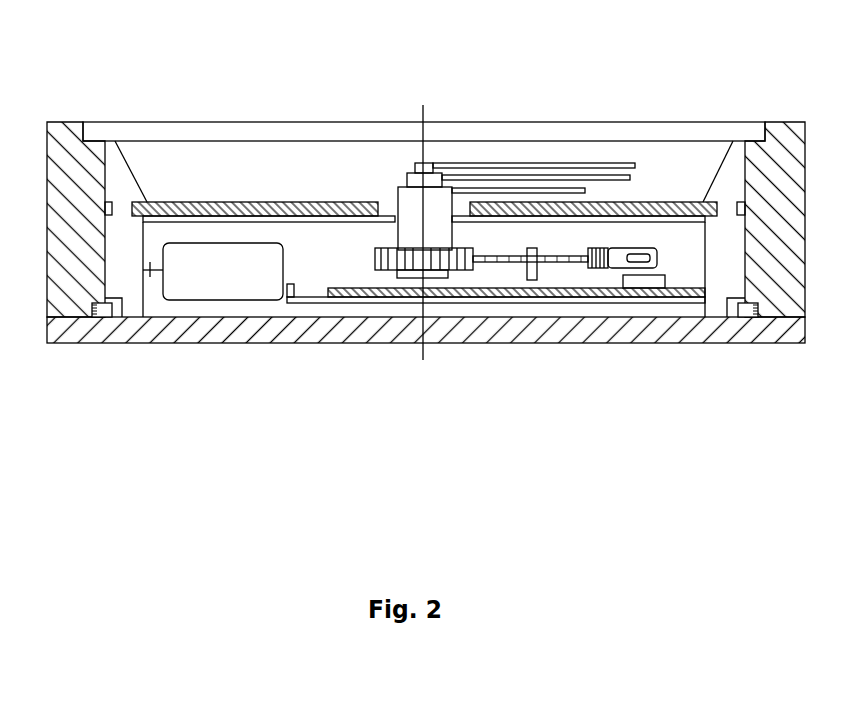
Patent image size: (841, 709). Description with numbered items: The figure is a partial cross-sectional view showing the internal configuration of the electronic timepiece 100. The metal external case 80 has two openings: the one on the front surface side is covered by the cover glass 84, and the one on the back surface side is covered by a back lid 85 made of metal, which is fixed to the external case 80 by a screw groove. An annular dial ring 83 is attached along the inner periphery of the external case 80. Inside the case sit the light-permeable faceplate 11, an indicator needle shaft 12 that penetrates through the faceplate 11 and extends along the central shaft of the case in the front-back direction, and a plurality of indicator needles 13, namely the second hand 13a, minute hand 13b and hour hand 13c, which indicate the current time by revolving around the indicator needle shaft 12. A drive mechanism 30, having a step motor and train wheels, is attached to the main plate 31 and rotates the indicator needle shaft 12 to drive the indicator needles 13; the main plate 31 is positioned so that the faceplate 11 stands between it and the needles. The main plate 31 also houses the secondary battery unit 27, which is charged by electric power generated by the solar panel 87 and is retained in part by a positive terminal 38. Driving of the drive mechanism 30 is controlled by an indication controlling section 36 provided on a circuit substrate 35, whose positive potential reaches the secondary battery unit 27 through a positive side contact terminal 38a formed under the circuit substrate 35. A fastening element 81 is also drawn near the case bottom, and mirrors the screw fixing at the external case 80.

The electronic timepiece 100 is at (762, 46).
The faceplate 11 is at (258, 205).
The solar panel 87 is at (293, 210).
The cover glass 84 is at (322, 133).
The indicator needle shaft 12 is at (420, 163).
The indicator needles 13 is at (534, 120).
The second hand 13a is at (600, 164).
The minute hand 13b is at (547, 176).
The hour hand 13c is at (495, 189).
The dial ring 83 is at (737, 160).
The screw 81 is at (132, 305).
The main plate 31 is at (163, 317).
The secondary battery unit 27 is at (220, 290).
The positive side contact terminal 38a is at (293, 297).
The positive terminal 38 is at (318, 303).
The drive mechanism 30 is at (490, 272).
The circuit substrate 35 is at (583, 295).
The indication controlling section 36 is at (642, 280).
The back lid 85 is at (697, 335).
The external case 80 is at (782, 302).